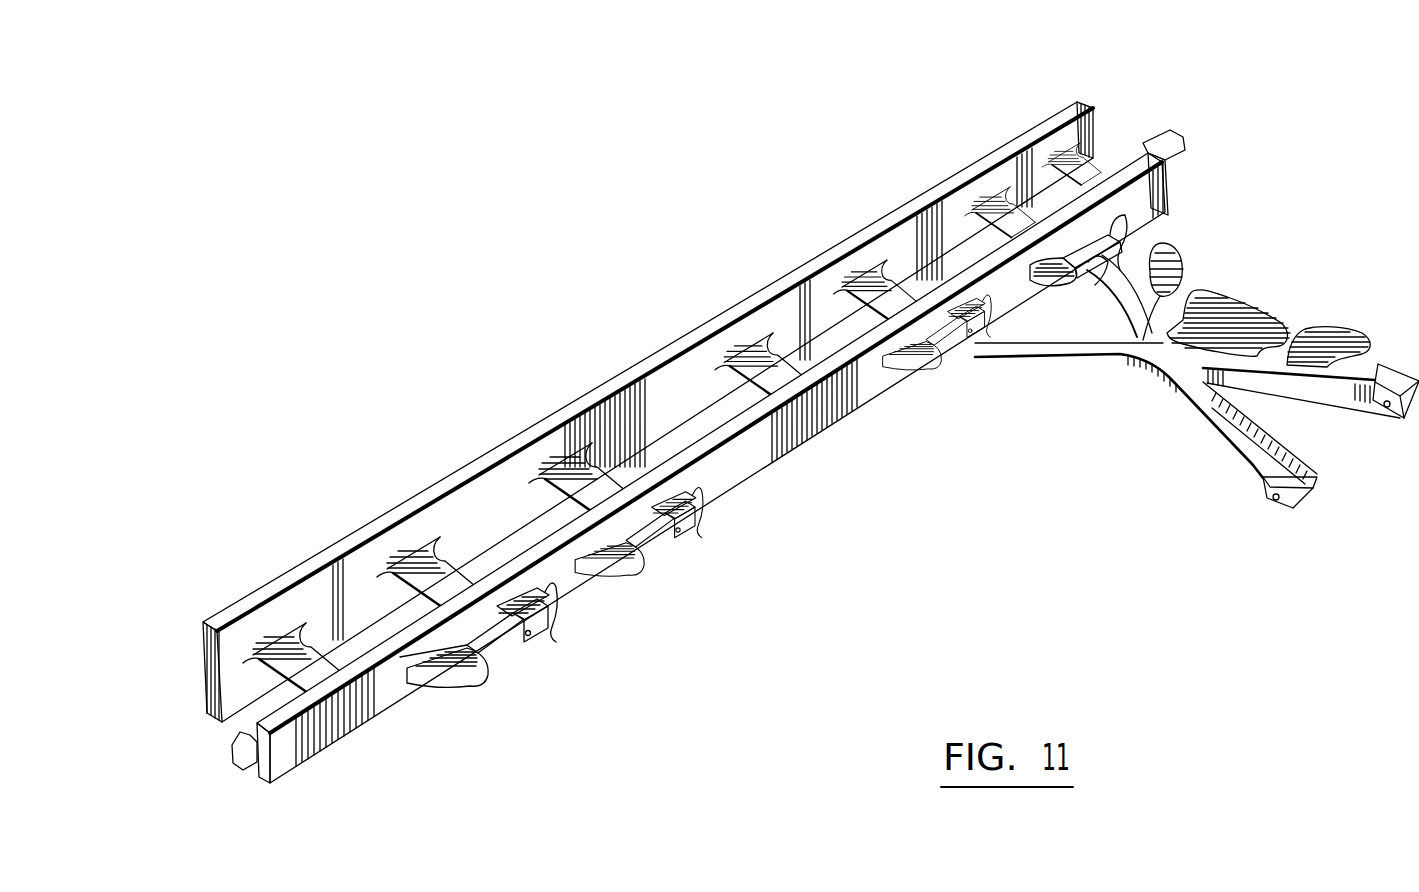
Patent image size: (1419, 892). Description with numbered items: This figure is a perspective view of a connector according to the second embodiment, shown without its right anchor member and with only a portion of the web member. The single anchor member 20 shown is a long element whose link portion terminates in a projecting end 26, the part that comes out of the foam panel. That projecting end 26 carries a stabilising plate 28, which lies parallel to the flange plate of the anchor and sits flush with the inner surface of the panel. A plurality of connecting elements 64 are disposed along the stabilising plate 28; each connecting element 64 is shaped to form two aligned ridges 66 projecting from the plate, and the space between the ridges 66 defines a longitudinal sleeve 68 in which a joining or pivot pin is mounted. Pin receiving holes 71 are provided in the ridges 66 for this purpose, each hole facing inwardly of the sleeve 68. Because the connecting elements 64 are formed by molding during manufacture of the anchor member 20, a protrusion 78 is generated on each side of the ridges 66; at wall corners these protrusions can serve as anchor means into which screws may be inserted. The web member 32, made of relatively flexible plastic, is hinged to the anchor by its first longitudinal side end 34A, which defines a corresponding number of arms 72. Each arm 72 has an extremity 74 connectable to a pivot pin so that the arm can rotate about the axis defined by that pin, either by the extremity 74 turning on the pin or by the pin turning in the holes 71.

The anchor member 20 is at (886, 176).
The projecting end 26 is at (258, 782).
The stabilising plate 28 is at (857, 397).
The web member 32 is at (1197, 345).
The first longitudinal side end 34A is at (1100, 375).
The connecting element 64 is at (1107, 237).
The ridge 66 is at (547, 635).
The longitudinal sleeve 68 is at (498, 658).
The pin receiving hole 71 is at (693, 548).
The arm 72 is at (1130, 303).
The extremity 74 is at (1038, 313).
The protrusion 78 is at (703, 480).